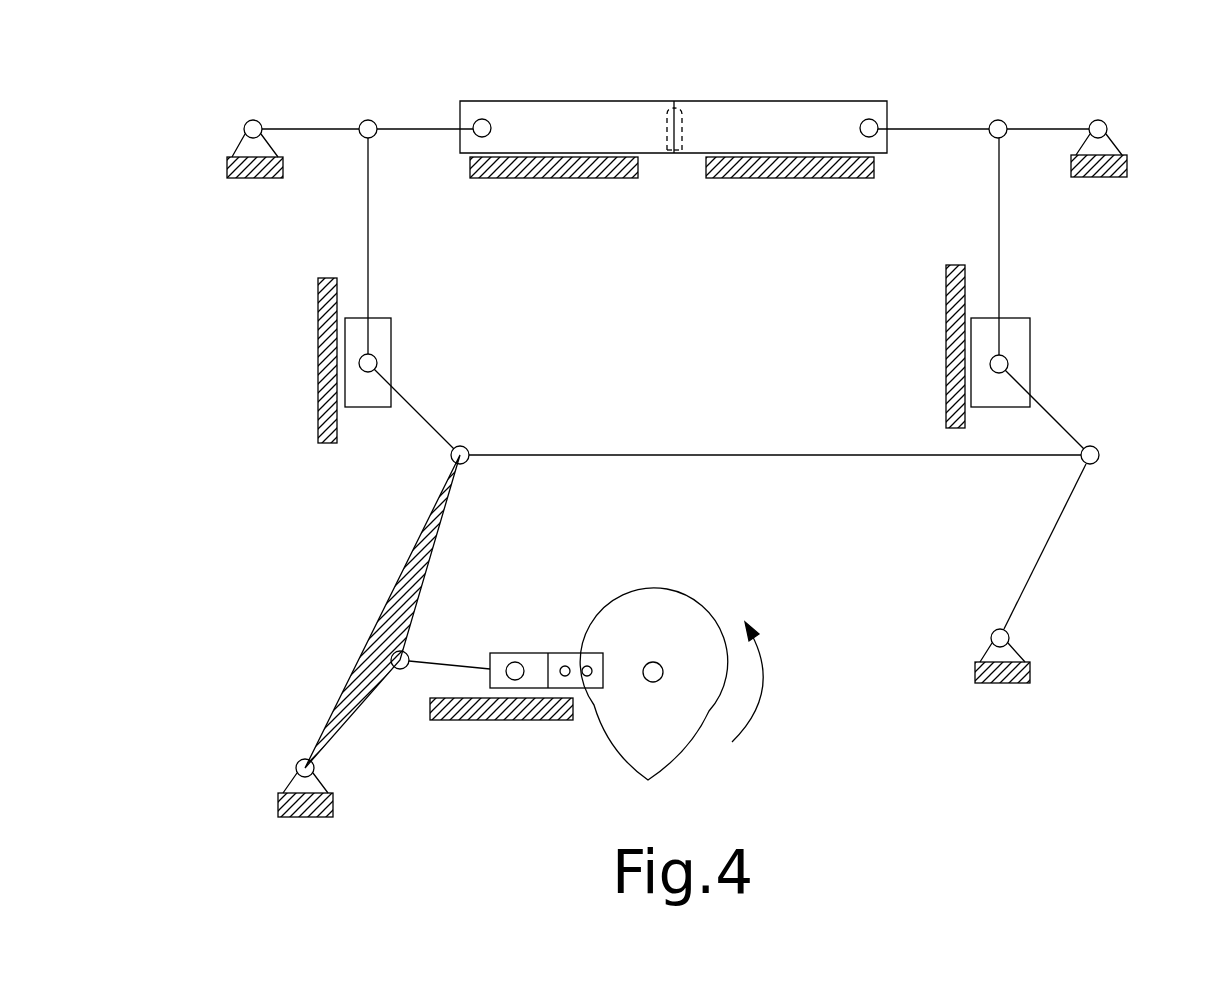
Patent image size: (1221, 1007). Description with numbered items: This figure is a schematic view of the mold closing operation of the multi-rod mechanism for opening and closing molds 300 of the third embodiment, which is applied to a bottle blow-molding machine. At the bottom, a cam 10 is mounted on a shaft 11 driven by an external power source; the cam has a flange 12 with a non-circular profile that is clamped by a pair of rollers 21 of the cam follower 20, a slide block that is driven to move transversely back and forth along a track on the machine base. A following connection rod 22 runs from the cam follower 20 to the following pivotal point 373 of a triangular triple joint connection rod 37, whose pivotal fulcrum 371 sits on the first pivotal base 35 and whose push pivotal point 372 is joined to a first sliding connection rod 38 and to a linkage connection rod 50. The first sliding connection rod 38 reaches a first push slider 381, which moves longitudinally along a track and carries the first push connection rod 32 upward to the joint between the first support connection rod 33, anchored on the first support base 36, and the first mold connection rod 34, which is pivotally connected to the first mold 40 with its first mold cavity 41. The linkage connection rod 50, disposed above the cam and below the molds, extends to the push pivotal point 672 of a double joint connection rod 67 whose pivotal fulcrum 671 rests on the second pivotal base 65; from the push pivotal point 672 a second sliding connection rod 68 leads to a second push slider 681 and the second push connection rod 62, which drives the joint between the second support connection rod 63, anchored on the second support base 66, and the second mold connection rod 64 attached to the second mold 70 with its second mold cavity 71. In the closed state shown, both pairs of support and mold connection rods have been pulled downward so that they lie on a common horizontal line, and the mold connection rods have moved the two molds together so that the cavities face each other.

The multi-rod mechanism for opening and closing molds 300 is at (253, 44).
The cam 10 is at (692, 605).
The shaft 11 is at (655, 682).
The flange 12 is at (618, 595).
The cam follower 20 is at (515, 653).
The rollers 21 is at (588, 666).
The following connection rod 22 is at (467, 660).
The first push connection rod 32 is at (369, 232).
The first support connection rod 33 is at (326, 128).
The first mold connection rod 34 is at (406, 128).
The first pivotal base 35 is at (318, 788).
The first support base 36 is at (240, 147).
The triple joint connection rod 37 is at (434, 506).
The first sliding connection rod 38 is at (420, 410).
The first mold 40 is at (598, 101).
The first mold cavity 41 is at (669, 155).
The linkage connection rod 50 is at (745, 455).
The second push connection rod 62 is at (1000, 232).
The second support connection rod 63 is at (1042, 128).
The second mold connection rod 64 is at (939, 128).
The second pivotal base 65 is at (975, 655).
The second support base 66 is at (1108, 140).
The double joint connection rod 67 is at (1050, 540).
The second sliding connection rod 68 is at (1060, 415).
The second mold 70 is at (768, 101).
The second mold cavity 71 is at (682, 155).
The pivotal fulcrum 371 is at (296, 770).
The push pivotal point 372 is at (470, 445).
The following pivotal point 373 is at (400, 672).
The first push slider 381 is at (382, 342).
The pivotal fulcrum 671 is at (1009, 636).
The push pivotal point 672 is at (1099, 455).
The second push slider 681 is at (1030, 342).